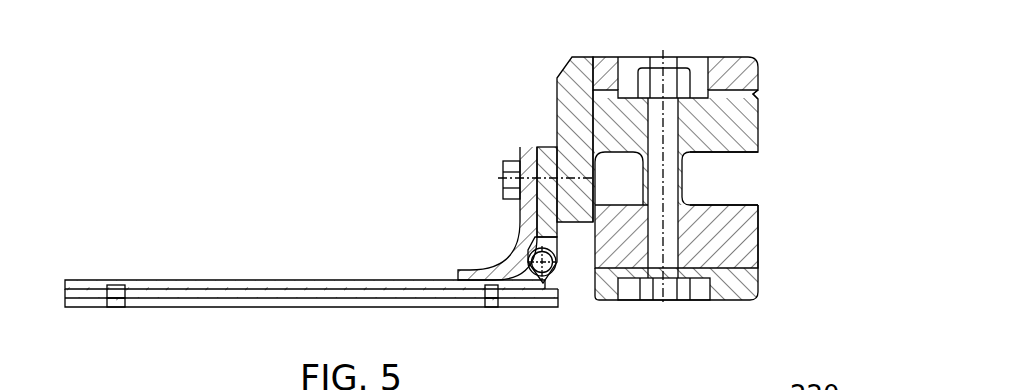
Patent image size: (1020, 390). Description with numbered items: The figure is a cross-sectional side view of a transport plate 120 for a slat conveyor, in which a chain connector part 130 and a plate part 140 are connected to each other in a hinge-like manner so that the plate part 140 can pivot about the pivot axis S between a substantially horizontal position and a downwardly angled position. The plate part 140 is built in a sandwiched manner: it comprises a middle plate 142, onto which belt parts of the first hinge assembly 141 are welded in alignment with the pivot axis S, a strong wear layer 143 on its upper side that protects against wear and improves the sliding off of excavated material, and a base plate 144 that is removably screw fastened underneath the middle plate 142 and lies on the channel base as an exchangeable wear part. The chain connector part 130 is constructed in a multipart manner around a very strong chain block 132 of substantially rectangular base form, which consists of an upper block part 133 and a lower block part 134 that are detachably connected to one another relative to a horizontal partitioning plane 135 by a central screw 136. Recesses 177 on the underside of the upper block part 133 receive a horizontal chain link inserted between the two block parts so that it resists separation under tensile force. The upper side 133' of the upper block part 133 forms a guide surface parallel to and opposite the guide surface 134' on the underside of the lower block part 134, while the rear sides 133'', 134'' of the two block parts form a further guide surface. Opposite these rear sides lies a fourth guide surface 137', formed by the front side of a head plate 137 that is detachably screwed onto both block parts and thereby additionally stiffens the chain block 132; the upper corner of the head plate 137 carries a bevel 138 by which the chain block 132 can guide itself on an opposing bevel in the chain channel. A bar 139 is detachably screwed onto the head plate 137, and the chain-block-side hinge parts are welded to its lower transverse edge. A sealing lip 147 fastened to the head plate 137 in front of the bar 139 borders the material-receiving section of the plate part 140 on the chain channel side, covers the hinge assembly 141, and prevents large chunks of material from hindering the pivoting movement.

The transport plate 120 is at (248, 83).
The chain connector part 130 is at (502, 100).
The chain block 132 is at (777, 53).
The upper block part 133 is at (711, 156).
The upper side of the upper block part 133' is at (646, 55).
The rear side of the upper block part 133'' is at (811, 77).
The lower block part 134 is at (726, 254).
The guide surface on the underside of the lower block part 134' is at (703, 313).
The rear side of the lower block part 134'' is at (814, 237).
The horizontal partitioning plane 135 is at (713, 200).
The central screw 136 is at (673, 138).
The head plate 137 is at (528, 139).
The fourth guide surface 137' is at (495, 187).
The bevel 138 is at (543, 63).
The bar 139 is at (530, 227).
The plate part 140 is at (222, 238).
The first hinge assembly 141 is at (553, 278).
The middle plate 142 is at (242, 295).
The wear layer 143 is at (158, 283).
The base plate 144 is at (150, 306).
The sealing lip 147 is at (500, 265).
The recess 177 is at (705, 182).
The pivot axis S is at (530, 287).